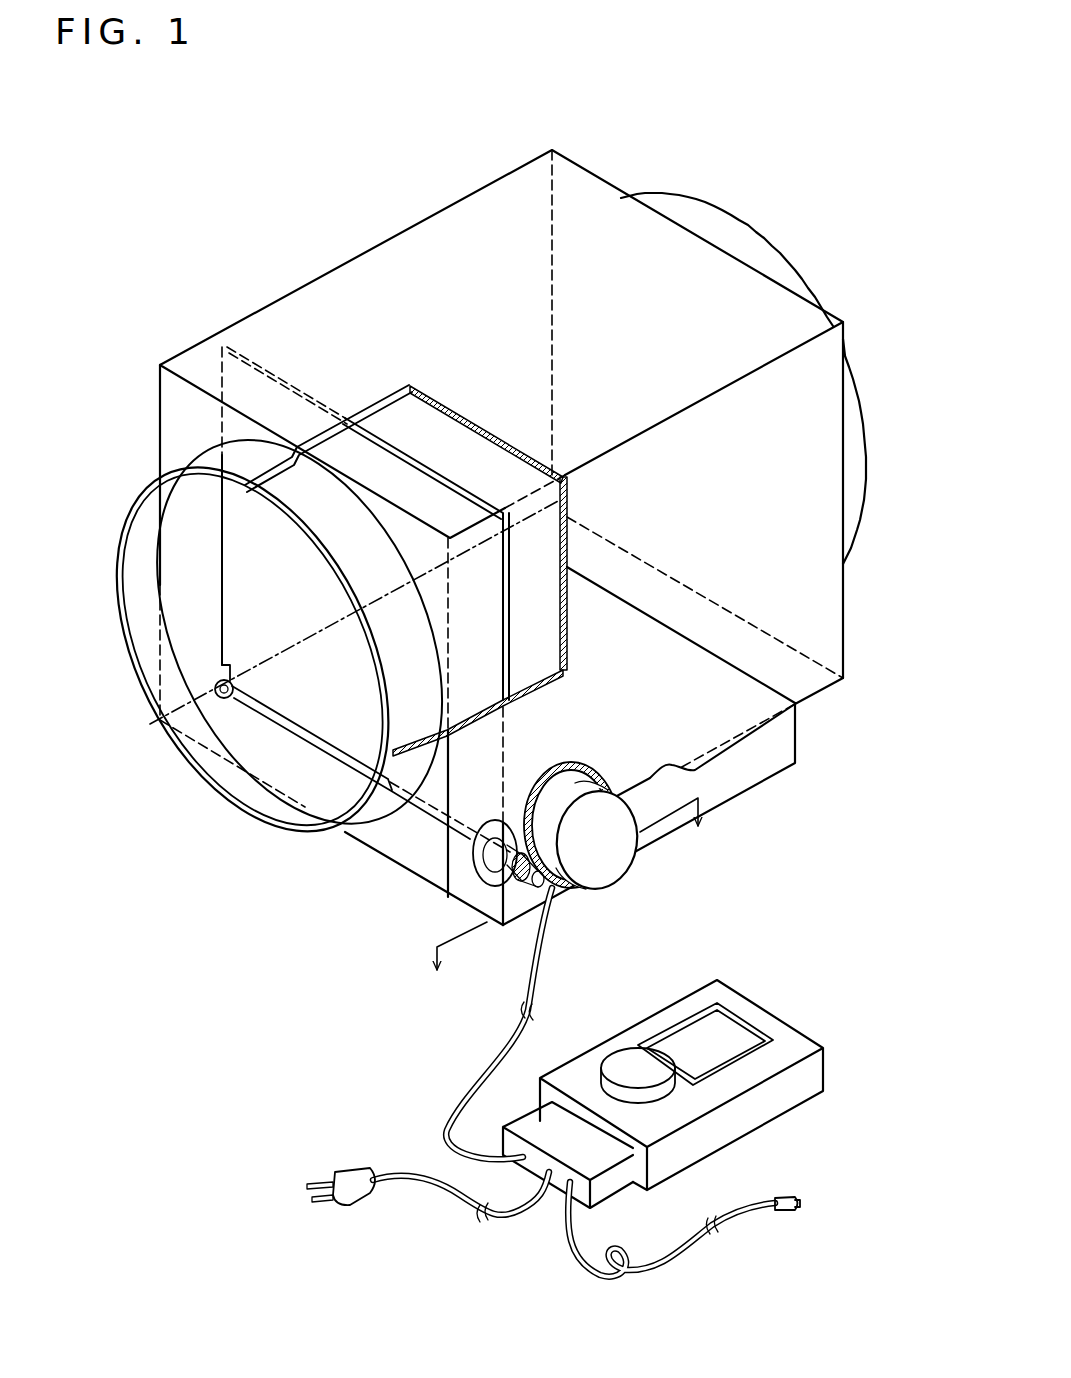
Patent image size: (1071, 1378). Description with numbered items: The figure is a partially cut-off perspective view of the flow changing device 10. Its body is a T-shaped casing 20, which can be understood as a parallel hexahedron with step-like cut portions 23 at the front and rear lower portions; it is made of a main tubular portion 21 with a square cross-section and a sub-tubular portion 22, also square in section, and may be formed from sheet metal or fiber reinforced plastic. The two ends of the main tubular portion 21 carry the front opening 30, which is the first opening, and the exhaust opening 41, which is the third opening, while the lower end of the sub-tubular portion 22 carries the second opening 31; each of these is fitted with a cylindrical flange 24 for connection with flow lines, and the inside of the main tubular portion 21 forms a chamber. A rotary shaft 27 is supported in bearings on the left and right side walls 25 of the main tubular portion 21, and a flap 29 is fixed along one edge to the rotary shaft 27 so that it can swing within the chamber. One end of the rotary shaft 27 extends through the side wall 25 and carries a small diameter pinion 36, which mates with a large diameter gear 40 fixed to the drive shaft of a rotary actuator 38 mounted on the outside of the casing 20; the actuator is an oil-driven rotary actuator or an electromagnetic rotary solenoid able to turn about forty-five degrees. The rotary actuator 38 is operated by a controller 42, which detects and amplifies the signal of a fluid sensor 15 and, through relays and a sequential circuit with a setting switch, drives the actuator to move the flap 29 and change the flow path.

The flow changing device 10 is at (305, 1065).
The fluid sensor 15 is at (783, 1200).
The casing 20 is at (882, 738).
The main tubular portion 21 is at (825, 682).
The sub-tubular portion 22 is at (777, 755).
The step-like cut portions 23 is at (800, 703).
The cylindrical flanges 24 is at (210, 457).
The side wall 25 is at (827, 633).
The rotary shaft 27 is at (342, 755).
The flap 29 is at (412, 482).
The front opening 30 is at (275, 760).
The opening of the sub-tubular portion 31 is at (650, 862).
The pinion 36 is at (525, 890).
The rotary actuator 38 is at (600, 870).
The large diameter gear 40 is at (672, 768).
The exhaust opening 41 is at (845, 297).
The controller 42 is at (810, 1027).